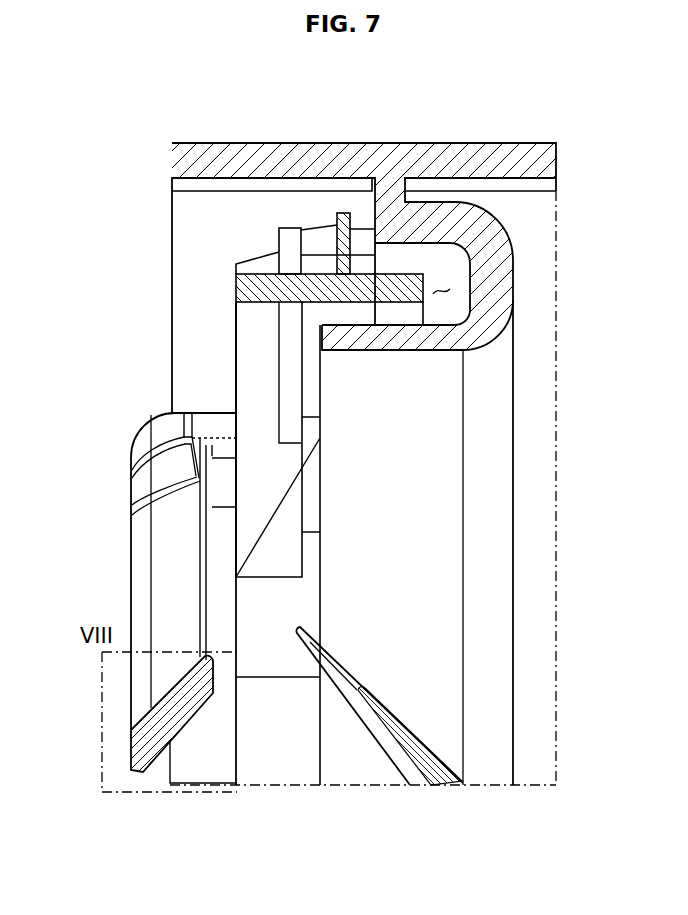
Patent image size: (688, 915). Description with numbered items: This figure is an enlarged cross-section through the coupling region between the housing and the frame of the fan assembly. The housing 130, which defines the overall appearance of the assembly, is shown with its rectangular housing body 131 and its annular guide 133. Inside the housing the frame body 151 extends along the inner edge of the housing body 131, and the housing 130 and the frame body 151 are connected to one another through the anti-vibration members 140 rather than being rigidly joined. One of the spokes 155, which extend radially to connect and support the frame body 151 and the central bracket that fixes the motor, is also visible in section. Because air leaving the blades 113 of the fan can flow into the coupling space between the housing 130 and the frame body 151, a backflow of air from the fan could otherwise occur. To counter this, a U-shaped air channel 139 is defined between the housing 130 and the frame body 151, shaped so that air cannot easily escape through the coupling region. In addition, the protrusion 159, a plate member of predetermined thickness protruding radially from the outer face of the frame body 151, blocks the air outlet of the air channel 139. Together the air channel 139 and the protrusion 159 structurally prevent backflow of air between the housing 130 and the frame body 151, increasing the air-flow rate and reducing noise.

The blades 113 is at (425, 745).
The housing 130 is at (393, 190).
The housing body 131 is at (364, 464).
The guide 133 is at (485, 405).
The air channel 139 is at (448, 280).
The anti-vibration members 140 is at (290, 253).
The frame body 151 is at (243, 287).
The spokes 155 is at (143, 571).
The protrusion 159 is at (343, 213).